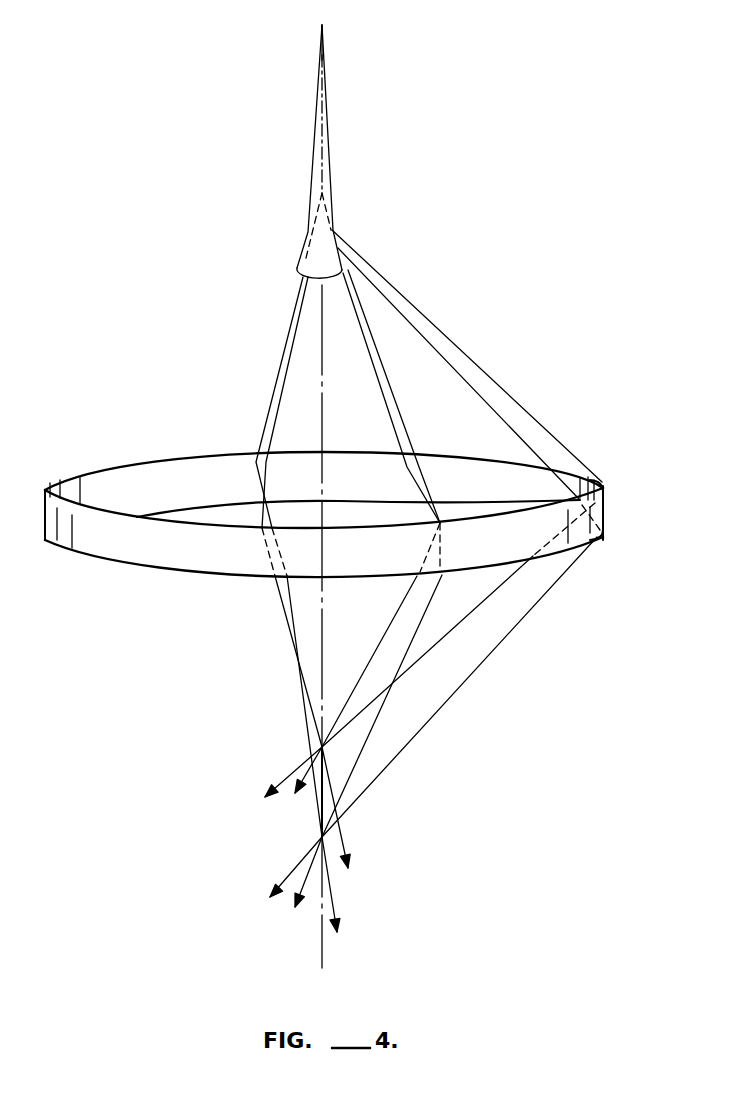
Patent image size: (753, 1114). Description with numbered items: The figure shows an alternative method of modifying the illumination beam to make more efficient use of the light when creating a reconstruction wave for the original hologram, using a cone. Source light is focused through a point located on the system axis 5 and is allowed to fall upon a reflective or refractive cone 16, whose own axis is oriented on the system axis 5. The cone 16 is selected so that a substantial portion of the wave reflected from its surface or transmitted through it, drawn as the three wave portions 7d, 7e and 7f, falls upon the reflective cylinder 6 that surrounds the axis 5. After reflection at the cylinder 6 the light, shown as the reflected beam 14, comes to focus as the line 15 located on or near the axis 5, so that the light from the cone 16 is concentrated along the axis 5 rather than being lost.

The cone 16 is at (312, 237).
The axis 5 is at (324, 383).
The wave 7f is at (280, 384).
The wave 7e is at (390, 397).
The wave 7d is at (462, 357).
The reflective cylinder 6 is at (606, 502).
The reflected light beam 14 is at (470, 652).
The line 15 is at (322, 807).